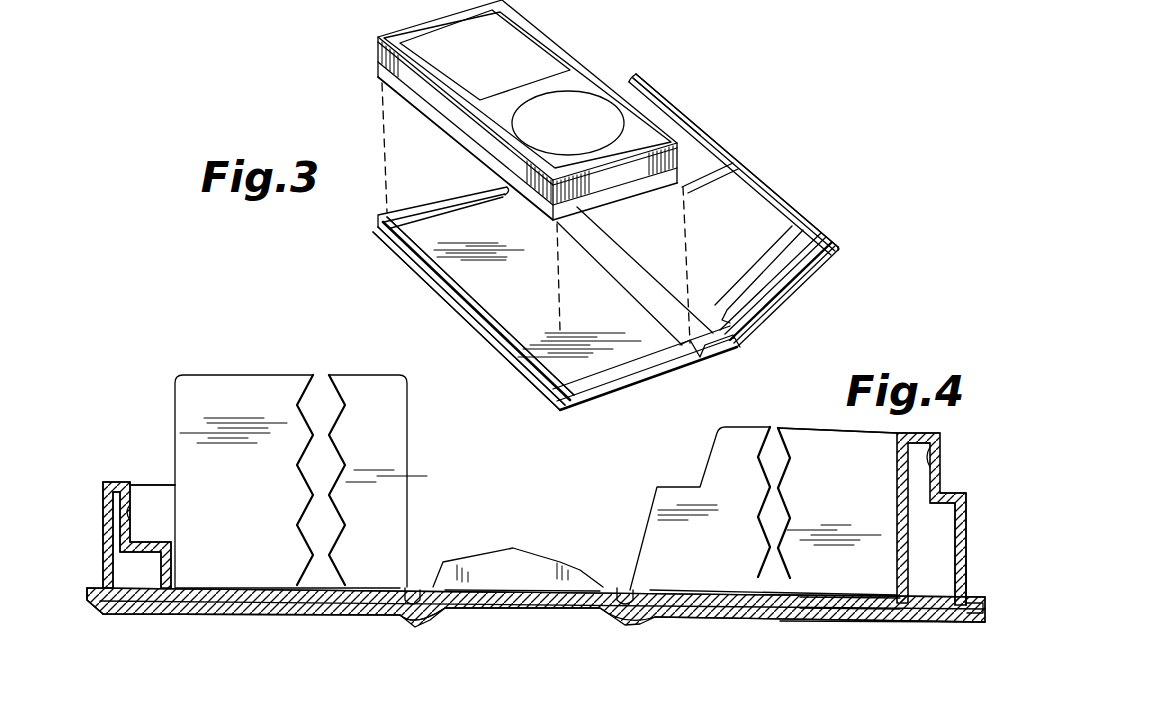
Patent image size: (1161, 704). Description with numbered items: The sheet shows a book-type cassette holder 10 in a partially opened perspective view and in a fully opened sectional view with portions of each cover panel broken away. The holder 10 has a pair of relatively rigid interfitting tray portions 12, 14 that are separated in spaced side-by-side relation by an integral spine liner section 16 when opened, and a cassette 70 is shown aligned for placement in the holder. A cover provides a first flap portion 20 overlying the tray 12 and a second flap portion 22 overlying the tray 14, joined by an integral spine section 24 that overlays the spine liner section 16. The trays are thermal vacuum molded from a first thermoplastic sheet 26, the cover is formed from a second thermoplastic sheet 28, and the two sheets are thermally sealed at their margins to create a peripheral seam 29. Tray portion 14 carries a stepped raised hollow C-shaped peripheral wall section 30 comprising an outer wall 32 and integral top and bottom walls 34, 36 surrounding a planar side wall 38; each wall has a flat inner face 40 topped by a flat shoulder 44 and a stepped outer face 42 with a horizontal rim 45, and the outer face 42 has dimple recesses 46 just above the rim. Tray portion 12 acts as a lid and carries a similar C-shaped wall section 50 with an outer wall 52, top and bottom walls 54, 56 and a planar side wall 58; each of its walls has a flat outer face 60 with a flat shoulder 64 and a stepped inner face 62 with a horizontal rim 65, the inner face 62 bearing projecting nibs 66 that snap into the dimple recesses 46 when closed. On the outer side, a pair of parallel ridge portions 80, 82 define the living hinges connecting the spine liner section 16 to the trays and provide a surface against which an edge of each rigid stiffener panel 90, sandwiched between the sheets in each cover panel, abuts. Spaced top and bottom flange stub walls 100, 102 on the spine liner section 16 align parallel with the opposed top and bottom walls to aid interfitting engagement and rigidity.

In FIG. 3, the holder 10 is at (830, 277).
In FIG. 3, the tray portion 12 is at (437, 255).
In FIG. 4, the tray portion 12 is at (165, 474).
In FIG. 3, the tray portion 14 is at (717, 118).
In FIG. 4, the tray portion 14 is at (766, 421).
In FIG. 3, the spine liner section 16 is at (664, 332).
In FIG. 4, the spine liner section 16 is at (530, 580).
In FIG. 4, the first flap portion 20 is at (254, 617).
In FIG. 4, the second flap portion 22 is at (803, 628).
In FIG. 4, the spine section 24 is at (484, 619).
In FIG. 4, the first thermoplastic sheet 26 is at (822, 597).
In FIG. 4, the second thermoplastic sheet 28 is at (860, 597).
In FIG. 4, the peripheral seam 29 is at (94, 590).
In FIG. 3, the peripheral wall section 30 is at (725, 161).
In FIG. 3, the outer wall 32 is at (760, 175).
In FIG. 4, the outer wall 32 is at (970, 517).
In FIG. 3, the top wall 34 is at (625, 77).
In FIG. 4, the top wall 34 is at (812, 430).
In FIG. 3, the bottom wall 36 is at (780, 290).
In FIG. 3, the planar side wall 38 is at (647, 98).
In FIG. 4, the flat inner face 40 is at (897, 493).
In FIG. 4, the stepped upstanding outer face 42 is at (967, 563).
In FIG. 4, the flat shoulder 44 is at (920, 432).
In FIG. 4, the horizontal rim 45 is at (947, 492).
In FIG. 4, the dimple recesses 46 is at (940, 453).
In FIG. 3, the peripheral wall section 50 is at (445, 303).
In FIG. 3, the outer wall 52 is at (483, 328).
In FIG. 4, the outer wall 52 is at (95, 545).
In FIG. 3, the top wall 54 is at (448, 202).
In FIG. 4, the top wall 54 is at (140, 485).
In FIG. 3, the bottom wall 56 is at (604, 378).
In FIG. 3, the planar side wall 58 is at (538, 344).
In FIG. 4, the flat outer face 60 is at (105, 480).
In FIG. 4, the stepped inner face 62 is at (172, 563).
In FIG. 4, the flat shoulder 64 is at (118, 480).
In FIG. 4, the horizontal rim 65 is at (157, 541).
In FIG. 4, the projecting nibs 66 is at (132, 510).
In FIG. 3, the cassette 70 is at (520, 15).
In FIG. 4, the cassette 70 is at (240, 383).
In FIG. 4, the ridge portion 80 is at (415, 580).
In FIG. 4, the ridge portion 82 is at (622, 579).
In FIG. 4, the rigid stiffener panel 90 is at (242, 584).
In FIG. 4, the top flange stub wall 100 is at (481, 554).
In FIG. 3, the bottom flange stub wall 102 is at (718, 348).